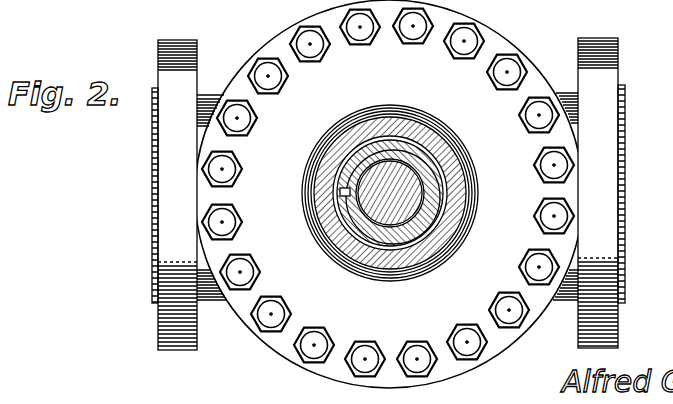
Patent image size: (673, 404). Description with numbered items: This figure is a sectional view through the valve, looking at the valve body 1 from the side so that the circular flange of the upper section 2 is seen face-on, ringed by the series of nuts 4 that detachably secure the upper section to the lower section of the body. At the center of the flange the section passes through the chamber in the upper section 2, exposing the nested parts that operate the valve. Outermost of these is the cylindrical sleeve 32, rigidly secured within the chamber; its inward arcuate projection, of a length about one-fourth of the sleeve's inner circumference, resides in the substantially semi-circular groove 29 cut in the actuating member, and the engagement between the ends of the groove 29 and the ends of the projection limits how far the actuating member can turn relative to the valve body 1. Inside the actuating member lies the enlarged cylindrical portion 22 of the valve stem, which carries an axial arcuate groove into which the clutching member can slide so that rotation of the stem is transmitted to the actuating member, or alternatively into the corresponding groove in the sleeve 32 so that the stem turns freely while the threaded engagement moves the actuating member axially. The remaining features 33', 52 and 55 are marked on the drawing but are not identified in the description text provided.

The valve body 1 is at (633, 122).
The upper section 2 is at (389, 194).
The nuts 4 is at (512, 58).
The enlarged cylindrical portion 22 is at (437, 160).
The semi-circular groove 29 is at (384, 160).
The cylindrical sleeve 32 is at (365, 145).
The eccentric ring 33' is at (407, 168).
The key 52 is at (347, 193).
The rings 55 is at (352, 262).